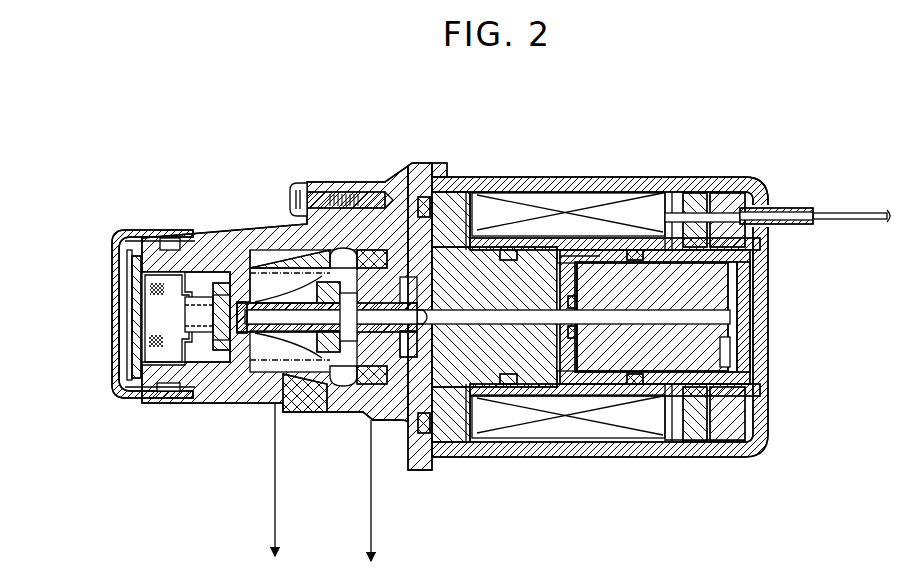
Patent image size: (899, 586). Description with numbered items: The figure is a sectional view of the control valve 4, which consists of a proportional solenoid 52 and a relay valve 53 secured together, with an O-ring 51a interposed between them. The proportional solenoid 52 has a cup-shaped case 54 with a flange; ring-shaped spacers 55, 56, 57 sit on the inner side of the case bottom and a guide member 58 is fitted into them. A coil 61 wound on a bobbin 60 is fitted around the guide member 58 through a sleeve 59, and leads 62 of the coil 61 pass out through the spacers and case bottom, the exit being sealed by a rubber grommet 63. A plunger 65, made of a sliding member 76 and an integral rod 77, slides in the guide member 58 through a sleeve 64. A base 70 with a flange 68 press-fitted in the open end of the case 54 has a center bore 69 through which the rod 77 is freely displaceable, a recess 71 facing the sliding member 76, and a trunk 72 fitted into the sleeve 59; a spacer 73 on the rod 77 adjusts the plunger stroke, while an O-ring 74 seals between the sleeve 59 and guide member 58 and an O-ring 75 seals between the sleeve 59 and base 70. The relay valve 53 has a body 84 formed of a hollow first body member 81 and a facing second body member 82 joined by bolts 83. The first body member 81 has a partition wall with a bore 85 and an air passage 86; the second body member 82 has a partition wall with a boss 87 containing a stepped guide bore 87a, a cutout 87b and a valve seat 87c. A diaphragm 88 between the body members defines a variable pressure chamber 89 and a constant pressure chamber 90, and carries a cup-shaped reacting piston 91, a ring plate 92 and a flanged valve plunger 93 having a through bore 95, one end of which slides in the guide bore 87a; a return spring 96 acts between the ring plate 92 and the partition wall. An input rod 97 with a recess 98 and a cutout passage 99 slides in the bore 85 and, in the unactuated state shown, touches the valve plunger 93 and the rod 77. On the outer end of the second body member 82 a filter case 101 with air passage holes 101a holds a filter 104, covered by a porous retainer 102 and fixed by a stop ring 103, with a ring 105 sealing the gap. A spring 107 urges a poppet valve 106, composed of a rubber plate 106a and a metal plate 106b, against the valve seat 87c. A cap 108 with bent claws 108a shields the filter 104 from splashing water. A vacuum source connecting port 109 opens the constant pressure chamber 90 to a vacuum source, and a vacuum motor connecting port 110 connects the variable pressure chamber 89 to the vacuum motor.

The control valve 4 is at (388, 175).
The O-ring 51a is at (432, 470).
The proportional solenoid 52 is at (572, 175).
The relay valve 53 is at (242, 248).
The case 54 is at (610, 237).
The ring-shaped spacer 55 is at (742, 182).
The ring-shaped spacer 56 is at (722, 200).
The ring-shaped spacer 57 is at (695, 200).
The guide member 58 is at (740, 283).
The sleeve 59 is at (640, 385).
The bobbin 60 is at (650, 235).
The coil 61 is at (597, 203).
The leads 62 is at (847, 216).
The grommet 63 is at (795, 210).
The sleeve 64 is at (702, 277).
The plunger 65 is at (722, 352).
The flange 68 is at (465, 445).
The center bore 69 is at (485, 305).
The base 70 is at (537, 247).
The recess 71 is at (580, 252).
The trunk 72 is at (535, 430).
The spacer 73 is at (590, 372).
The O-ring 74 is at (660, 440).
The O-ring 75 is at (570, 420).
The sliding member 76 is at (713, 340).
The rod 77 is at (722, 317).
The first body member 81 is at (358, 195).
The second body member 82 is at (273, 237).
The bolts 83 is at (298, 200).
The body 84 is at (343, 425).
The bore 85 is at (375, 405).
The air passage 86 is at (457, 250).
The boss 87 is at (262, 380).
The guide bore 87a is at (150, 234).
The cutout 87b is at (175, 236).
The valve seat 87c is at (133, 238).
The diaphragm 88 is at (285, 225).
The variable pressure chamber 89 is at (250, 355).
The constant pressure chamber 90 is at (425, 440).
The reacting piston 91 is at (424, 200).
The ring plate 92 is at (252, 266).
The valve plunger 93 is at (305, 395).
The through bore 95 is at (313, 385).
The return spring 96 is at (233, 262).
The input rod 97 is at (447, 225).
The recess 98 is at (358, 420).
The cutout passage 99 is at (437, 245).
The filter case 101 is at (165, 295).
The air passage holes 101a is at (180, 313).
The retainer 102 is at (135, 347).
The stop ring 103 is at (115, 372).
The filter 104 is at (147, 327).
The ring 105 is at (123, 397).
The poppet valve 106 is at (215, 340).
The rubber plate 106a is at (232, 350).
The metal plate 106b is at (217, 360).
The spring 107 is at (197, 340).
The cap 108 is at (126, 283).
The claws 108a is at (163, 232).
The vacuum source connecting port 109 is at (385, 400).
The vacuum motor connecting port 110 is at (290, 332).